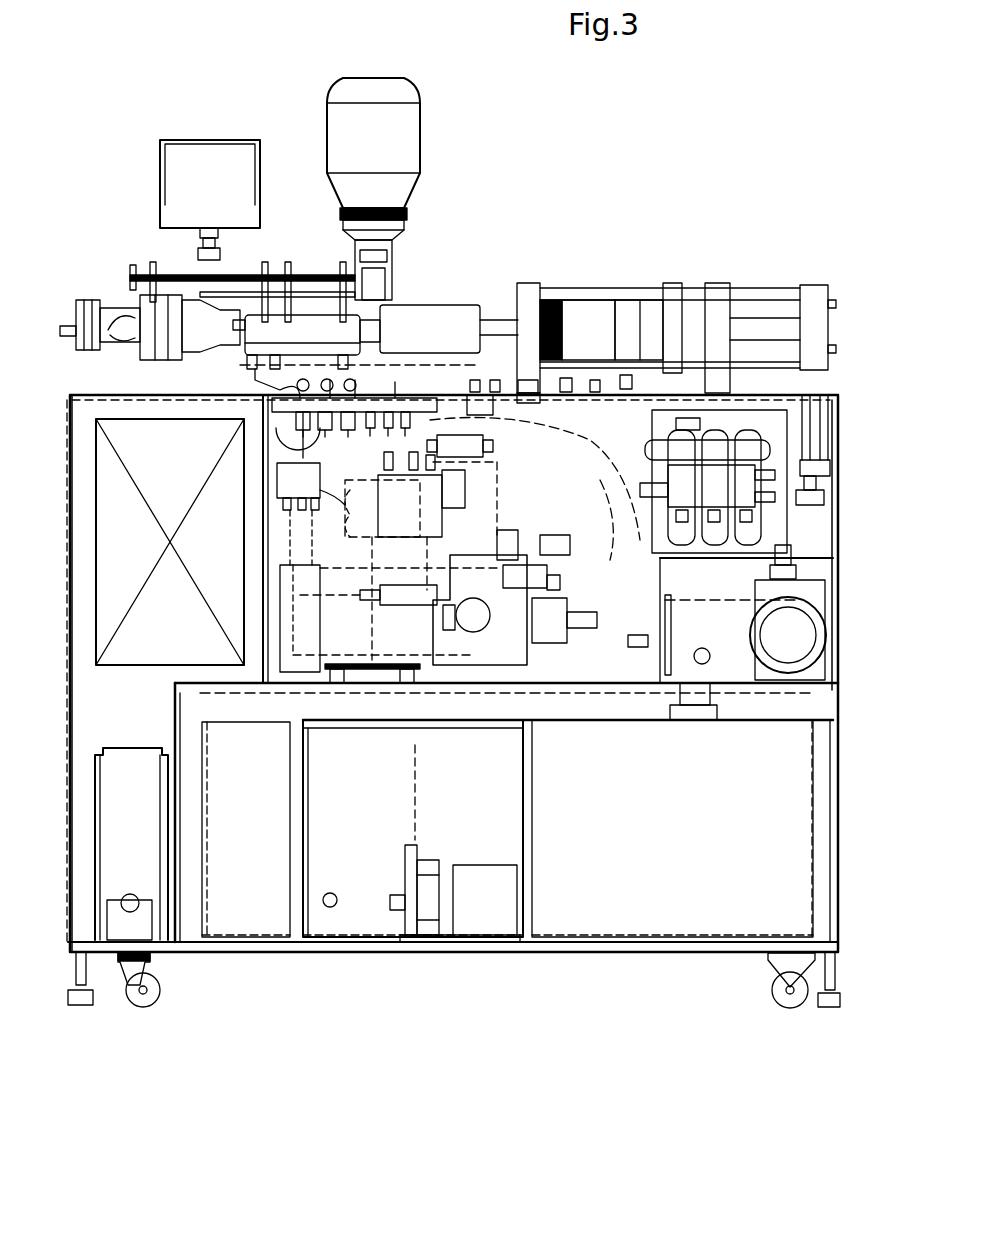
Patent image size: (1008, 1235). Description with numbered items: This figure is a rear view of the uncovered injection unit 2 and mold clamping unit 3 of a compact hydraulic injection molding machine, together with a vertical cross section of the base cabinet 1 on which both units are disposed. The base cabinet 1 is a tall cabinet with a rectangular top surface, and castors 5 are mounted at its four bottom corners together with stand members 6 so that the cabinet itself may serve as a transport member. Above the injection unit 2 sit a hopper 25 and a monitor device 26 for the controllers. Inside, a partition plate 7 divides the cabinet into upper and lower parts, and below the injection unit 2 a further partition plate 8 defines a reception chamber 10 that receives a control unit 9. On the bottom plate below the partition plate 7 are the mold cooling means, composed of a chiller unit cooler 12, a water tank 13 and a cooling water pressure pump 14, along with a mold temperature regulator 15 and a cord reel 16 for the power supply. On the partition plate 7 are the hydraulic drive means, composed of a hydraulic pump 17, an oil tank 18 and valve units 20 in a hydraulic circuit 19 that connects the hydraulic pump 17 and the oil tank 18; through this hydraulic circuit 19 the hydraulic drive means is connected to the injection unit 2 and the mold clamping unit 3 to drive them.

The base cabinet 1 is at (68, 620).
The injection unit 2 is at (205, 325).
The mold clamping unit 3 is at (700, 300).
The castors 5 is at (148, 998).
The stand members 6 is at (80, 1005).
The partition plate 7 is at (600, 688).
The partition plate 8 is at (262, 640).
The control unit 9 is at (140, 655).
The reception chamber 10 is at (80, 482).
The chiller unit cooler 12 is at (655, 900).
The water tank 13 is at (372, 905).
The cooling water pressure pump 14 is at (478, 905).
The mold temperature regulator 15 is at (245, 890).
The cord reel 16 is at (152, 875).
The hydraulic pump 17 is at (365, 650).
The oil tank 18 is at (732, 625).
The hydraulic circuit 19 is at (600, 390).
The valve units 20 is at (735, 470).
The hopper 25 is at (400, 135).
The monitor device 26 is at (213, 160).